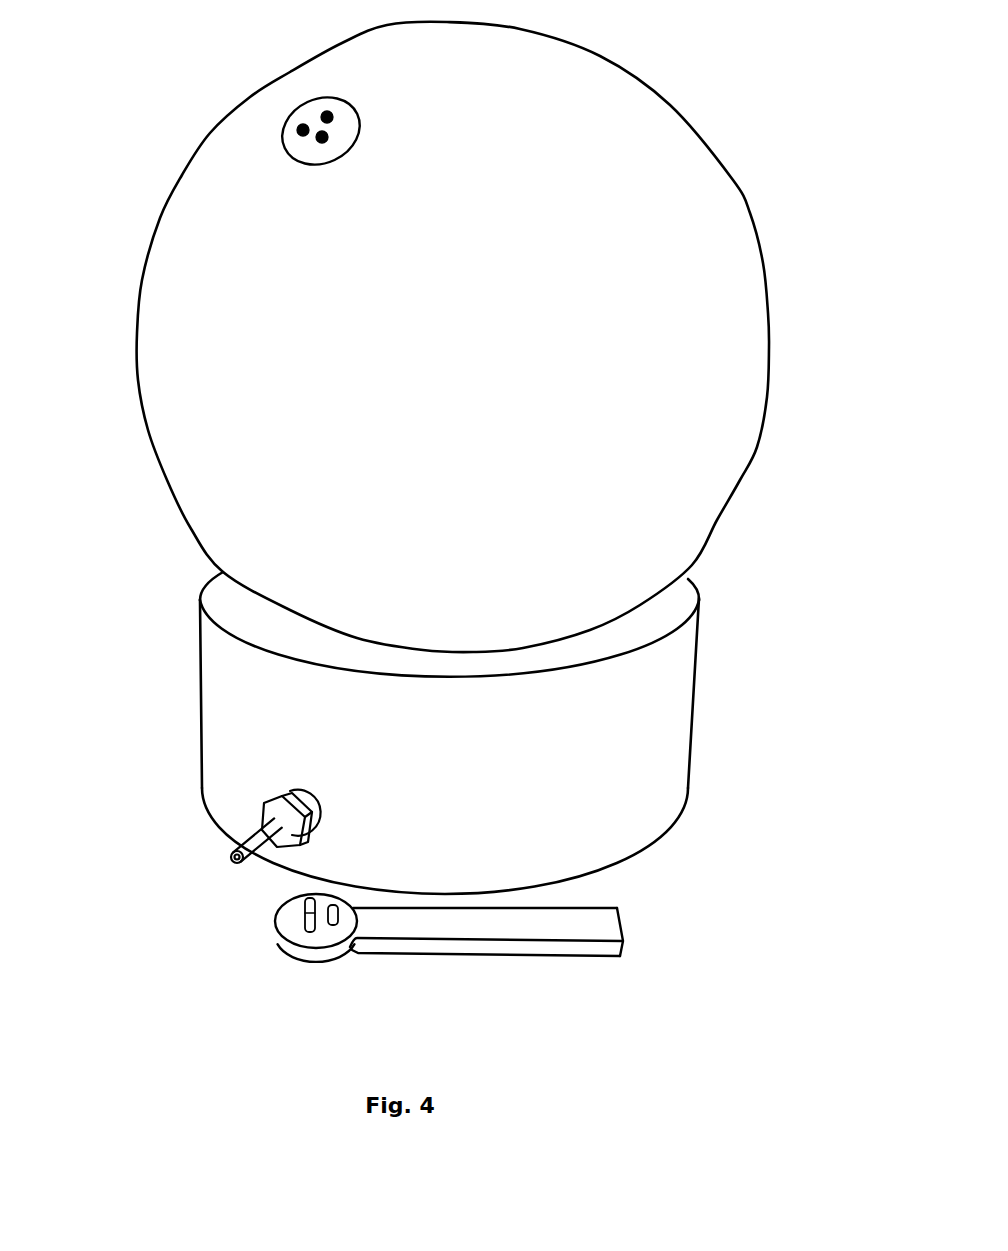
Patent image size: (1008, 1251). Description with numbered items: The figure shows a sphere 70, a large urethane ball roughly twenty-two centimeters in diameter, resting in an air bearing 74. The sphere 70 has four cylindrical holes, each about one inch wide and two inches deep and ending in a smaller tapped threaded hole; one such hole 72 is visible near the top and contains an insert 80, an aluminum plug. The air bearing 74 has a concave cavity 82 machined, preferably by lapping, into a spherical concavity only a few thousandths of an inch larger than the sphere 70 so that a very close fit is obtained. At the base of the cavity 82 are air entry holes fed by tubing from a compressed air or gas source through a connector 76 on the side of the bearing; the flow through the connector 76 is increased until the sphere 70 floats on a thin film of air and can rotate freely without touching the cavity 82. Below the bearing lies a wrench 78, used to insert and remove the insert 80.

The sphere 70 is at (768, 287).
The hole 72 is at (303, 145).
The air bearing 74 is at (197, 693).
The connector 76 is at (227, 862).
The wrench 78 is at (280, 952).
The insert 80 is at (327, 117).
The cavity 82 is at (613, 627).